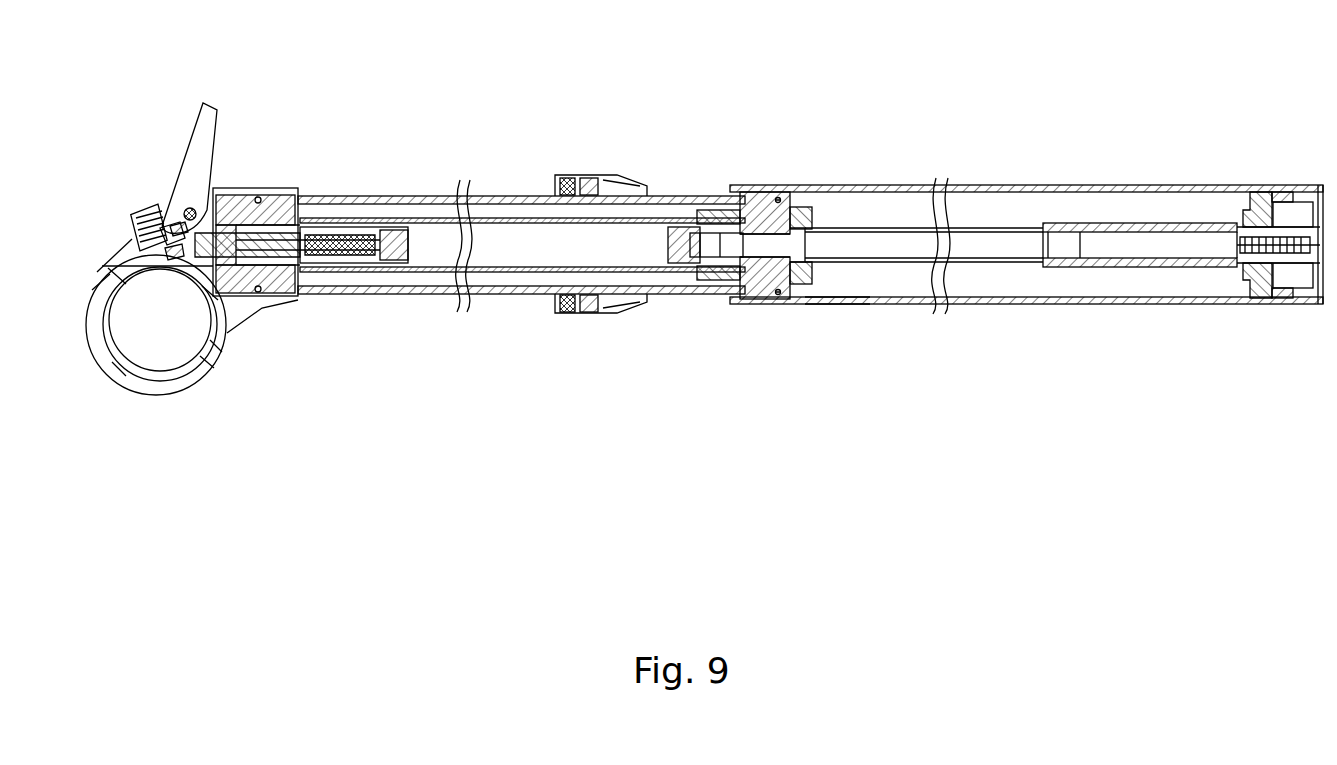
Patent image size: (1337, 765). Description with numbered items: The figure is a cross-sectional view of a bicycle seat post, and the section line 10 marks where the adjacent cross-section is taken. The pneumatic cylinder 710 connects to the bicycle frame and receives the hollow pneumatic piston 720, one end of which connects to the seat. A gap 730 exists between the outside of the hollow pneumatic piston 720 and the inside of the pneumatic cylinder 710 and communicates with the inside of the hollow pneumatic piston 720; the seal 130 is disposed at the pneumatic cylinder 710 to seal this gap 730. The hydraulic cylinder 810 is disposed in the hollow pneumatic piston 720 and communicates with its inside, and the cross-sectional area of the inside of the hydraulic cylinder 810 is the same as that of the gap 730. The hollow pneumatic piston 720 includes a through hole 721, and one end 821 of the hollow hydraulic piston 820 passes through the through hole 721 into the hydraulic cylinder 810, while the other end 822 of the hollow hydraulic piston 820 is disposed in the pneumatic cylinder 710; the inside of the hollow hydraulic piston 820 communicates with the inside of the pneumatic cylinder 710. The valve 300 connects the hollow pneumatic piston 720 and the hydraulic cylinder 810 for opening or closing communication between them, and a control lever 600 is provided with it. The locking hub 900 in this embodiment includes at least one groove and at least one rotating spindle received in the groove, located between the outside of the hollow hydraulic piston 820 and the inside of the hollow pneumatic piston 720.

The section line 10 is at (820, 98).
The seal 130 is at (657, 193).
The valve 300 is at (242, 187).
The control lever 600 is at (180, 167).
The pneumatic cylinder 710 is at (972, 186).
The hollow pneumatic piston 720 is at (516, 196).
The through hole 721 is at (847, 290).
The gap 730 is at (728, 300).
The hydraulic cylinder 810 is at (430, 218).
The hollow hydraulic piston 820 is at (1023, 248).
The one end of the hollow hydraulic piston 821 is at (676, 225).
The other end of the hollow hydraulic piston 822 is at (1188, 225).
The locking hub 900 is at (782, 300).